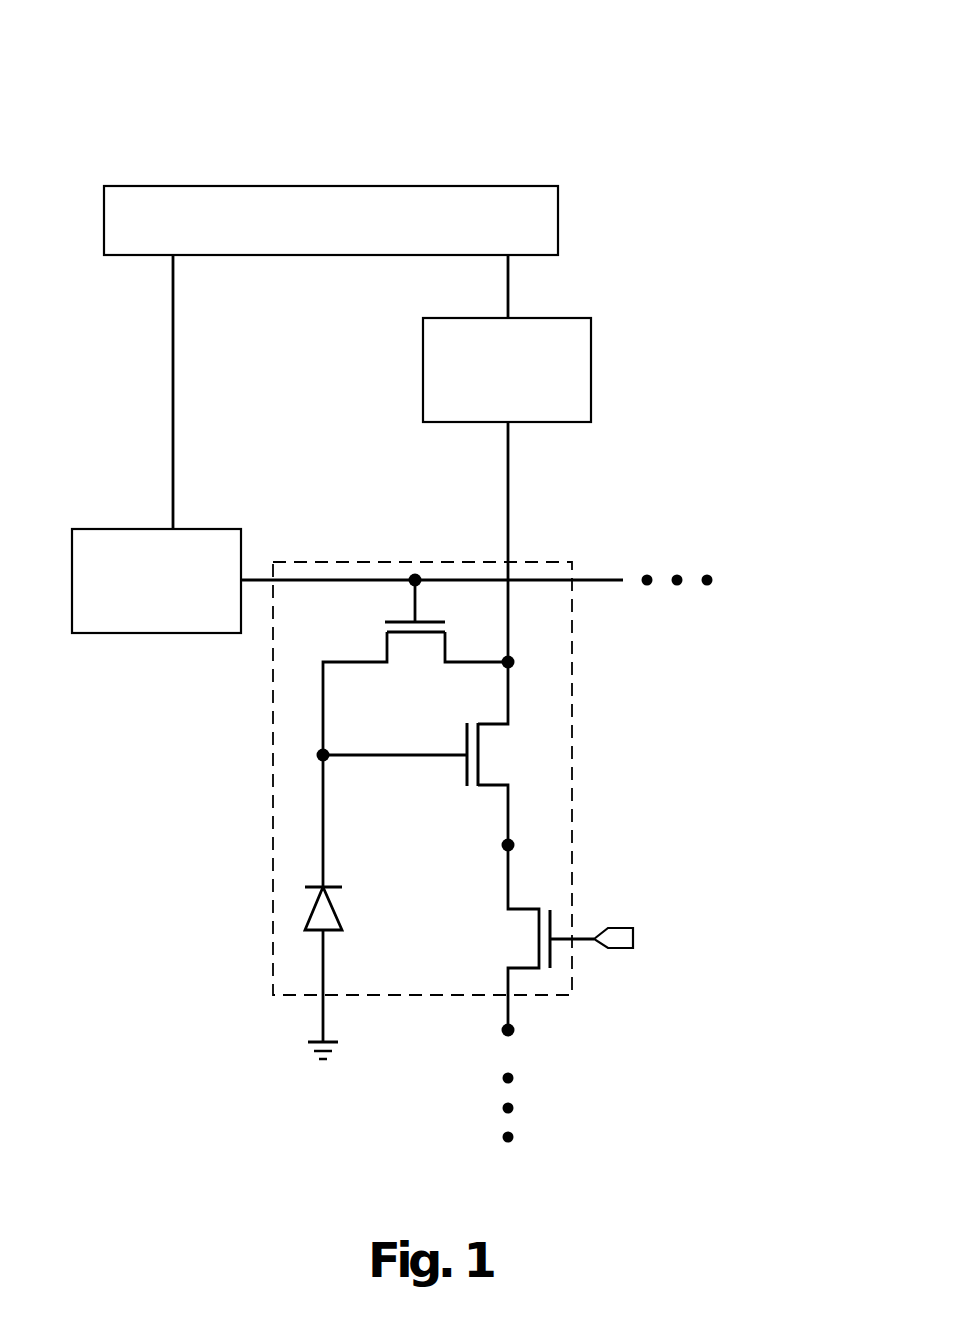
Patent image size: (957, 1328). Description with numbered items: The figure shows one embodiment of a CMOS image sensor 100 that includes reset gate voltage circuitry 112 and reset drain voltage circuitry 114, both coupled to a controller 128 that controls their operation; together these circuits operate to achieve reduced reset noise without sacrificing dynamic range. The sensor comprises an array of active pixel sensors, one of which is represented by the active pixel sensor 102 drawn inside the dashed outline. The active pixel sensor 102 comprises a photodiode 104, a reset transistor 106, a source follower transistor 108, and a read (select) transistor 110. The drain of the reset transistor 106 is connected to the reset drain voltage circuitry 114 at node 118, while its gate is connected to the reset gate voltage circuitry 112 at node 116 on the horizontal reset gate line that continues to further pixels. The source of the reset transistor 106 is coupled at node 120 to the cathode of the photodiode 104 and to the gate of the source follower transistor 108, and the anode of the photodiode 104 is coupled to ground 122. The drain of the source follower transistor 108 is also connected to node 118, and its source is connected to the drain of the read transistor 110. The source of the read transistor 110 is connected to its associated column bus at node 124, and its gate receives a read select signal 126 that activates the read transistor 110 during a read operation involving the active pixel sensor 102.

The CMOS image sensor 100 is at (755, 69).
The active pixel sensor 102 is at (606, 791).
The photodiode 104 is at (305, 920).
The reset transistor 106 is at (387, 640).
The source follower transistor 108 is at (467, 778).
The read transistor 110 is at (508, 900).
The reset gate voltage circuitry 112 is at (180, 529).
The reset drain voltage circuitry 114 is at (591, 372).
The node 116 is at (415, 574).
The node 118 is at (515, 662).
The node 120 is at (315, 753).
The ground 122 is at (333, 1047).
The node 124 is at (515, 1032).
The read select signal 126 is at (735, 957).
The controller 128 is at (558, 213).